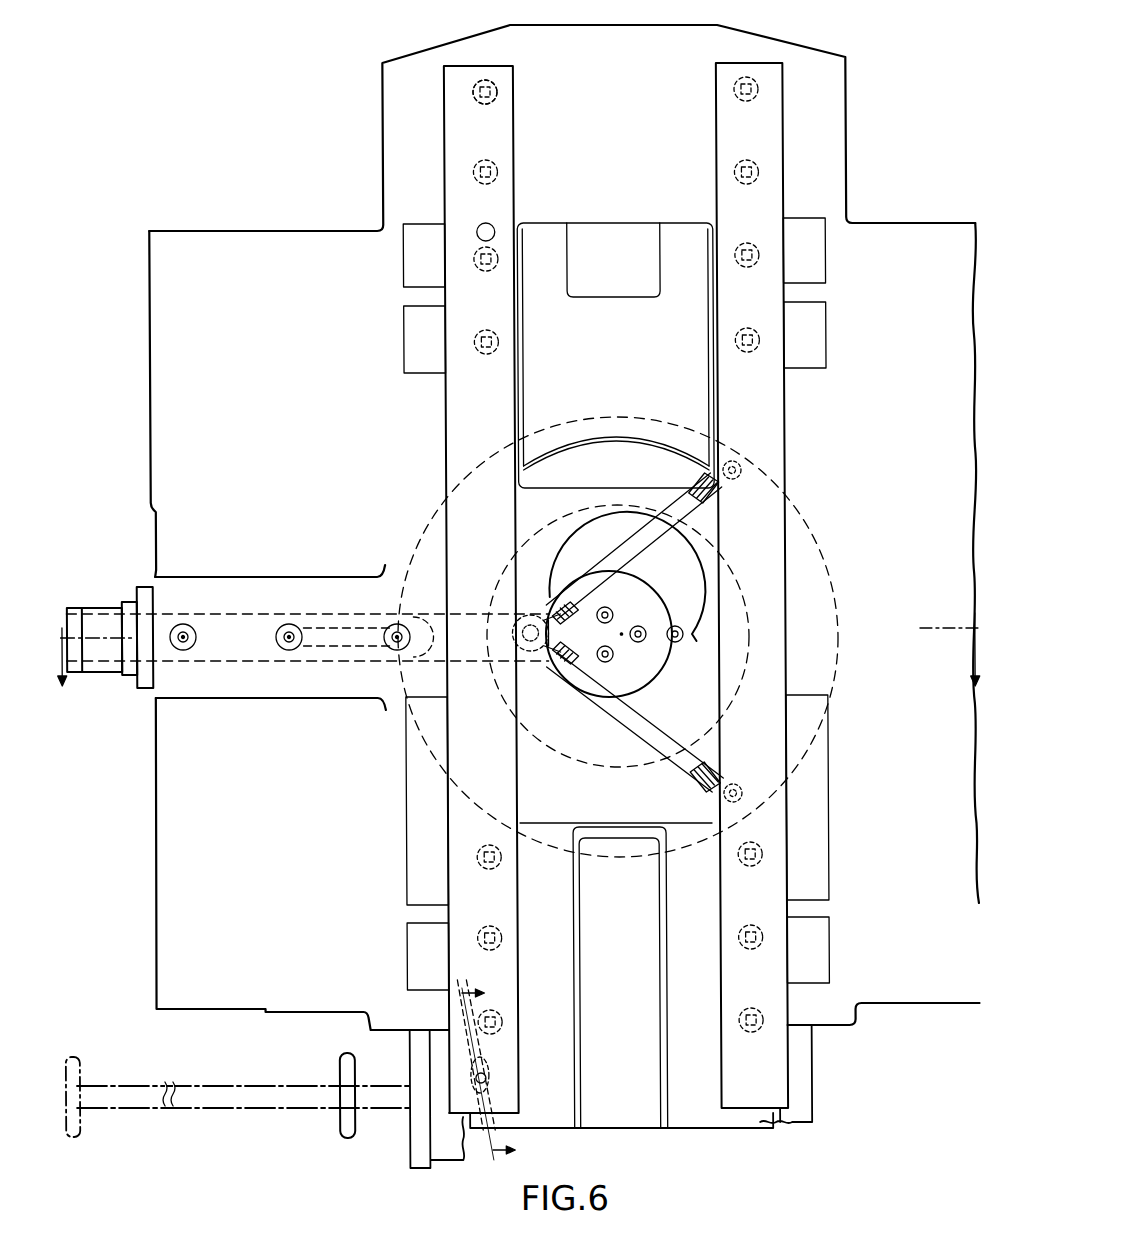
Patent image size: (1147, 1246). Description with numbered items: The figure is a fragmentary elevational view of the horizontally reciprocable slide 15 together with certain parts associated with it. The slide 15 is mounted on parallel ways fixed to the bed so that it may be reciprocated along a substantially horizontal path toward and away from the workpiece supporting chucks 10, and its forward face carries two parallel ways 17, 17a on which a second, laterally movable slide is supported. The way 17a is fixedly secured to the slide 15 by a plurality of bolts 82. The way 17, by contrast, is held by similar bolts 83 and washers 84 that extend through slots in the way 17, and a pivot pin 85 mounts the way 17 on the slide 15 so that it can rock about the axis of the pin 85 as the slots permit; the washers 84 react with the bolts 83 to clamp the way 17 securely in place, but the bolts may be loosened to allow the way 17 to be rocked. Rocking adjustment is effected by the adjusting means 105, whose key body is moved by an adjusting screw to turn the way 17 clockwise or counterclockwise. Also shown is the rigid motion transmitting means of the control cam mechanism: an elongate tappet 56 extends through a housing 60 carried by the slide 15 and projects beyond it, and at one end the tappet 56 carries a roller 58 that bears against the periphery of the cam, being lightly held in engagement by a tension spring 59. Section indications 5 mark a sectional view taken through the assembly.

The section line 5- 5 is at (519, 663).
The workpiece supporting chuck 10 is at (303, 1062).
The slide 15 is at (902, 232).
The way 17 is at (500, 68).
The way 17a is at (726, 70).
The tappet 56 is at (100, 608).
The roller 58 is at (532, 614).
The tension spring 59 is at (650, 526).
The housing 60 is at (290, 690).
The bolts 82 is at (745, 268).
The bolts 83 is at (472, 92).
The washers 84 is at (496, 100).
The pivot pin 85 is at (490, 224).
The adjusting means 105 is at (500, 1074).